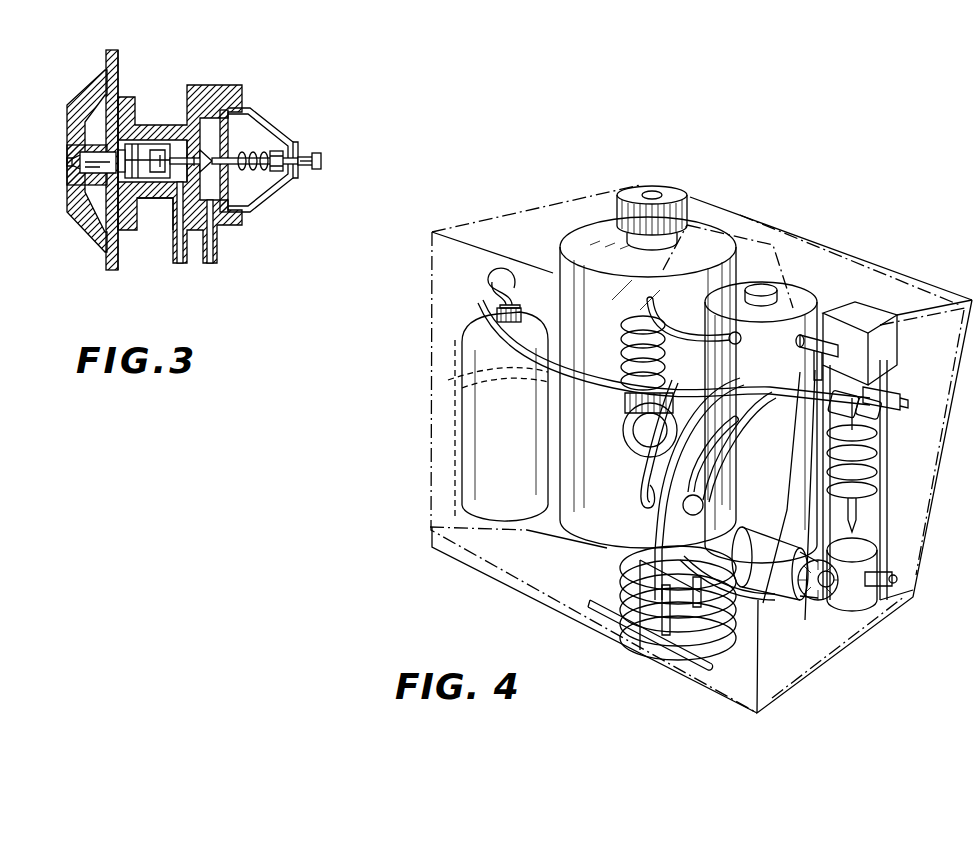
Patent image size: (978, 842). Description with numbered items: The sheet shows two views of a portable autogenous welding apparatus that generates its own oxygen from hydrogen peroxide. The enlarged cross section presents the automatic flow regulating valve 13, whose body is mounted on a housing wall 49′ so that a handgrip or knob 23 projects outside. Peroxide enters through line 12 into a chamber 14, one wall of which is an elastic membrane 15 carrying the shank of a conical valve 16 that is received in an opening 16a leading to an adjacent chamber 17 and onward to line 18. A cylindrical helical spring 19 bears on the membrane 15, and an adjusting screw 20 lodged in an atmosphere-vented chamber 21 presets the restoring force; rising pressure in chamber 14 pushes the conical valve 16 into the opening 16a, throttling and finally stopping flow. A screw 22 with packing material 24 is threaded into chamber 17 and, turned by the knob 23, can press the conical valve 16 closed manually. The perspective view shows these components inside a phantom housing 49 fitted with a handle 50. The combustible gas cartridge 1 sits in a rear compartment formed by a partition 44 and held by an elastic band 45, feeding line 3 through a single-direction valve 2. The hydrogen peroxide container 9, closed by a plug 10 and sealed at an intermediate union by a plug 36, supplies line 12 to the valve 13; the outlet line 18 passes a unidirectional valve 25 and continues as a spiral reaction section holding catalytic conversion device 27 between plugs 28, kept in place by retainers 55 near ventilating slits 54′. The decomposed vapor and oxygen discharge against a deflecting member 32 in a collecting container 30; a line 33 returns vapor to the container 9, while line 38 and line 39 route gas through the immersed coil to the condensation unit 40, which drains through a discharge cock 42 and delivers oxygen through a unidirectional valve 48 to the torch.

In FIG. 4, the combustible gas cartridge 1 is at (476, 340).
In FIG. 4, the single-direction valve 2 is at (880, 420).
In FIG. 4, the line 3 is at (485, 280).
In FIG. 4, the container 9 is at (596, 237).
In FIG. 4, the plug 10 is at (680, 204).
In FIG. 3, the line 12 is at (212, 270).
In FIG. 4, the line 12 is at (617, 579).
In FIG. 3, the automatic fluid flow regulating valve 13 is at (165, 77).
In FIG. 4, the automatic fluid flow regulating valve 13 is at (819, 609).
In FIG. 3, the chamber 14 is at (208, 127).
In FIG. 3, the elastic membrane 15 is at (226, 130).
In FIG. 3, the conical valve 16 is at (200, 176).
In FIG. 3, the opening 16a is at (188, 153).
In FIG. 3, the chamber 17 is at (163, 220).
In FIG. 3, the line 18 is at (180, 268).
In FIG. 4, the line 18 is at (660, 539).
In FIG. 3, the cylindrical helical spring 19 is at (283, 158).
In FIG. 3, the adjusting screw 20 is at (321, 163).
In FIG. 3, the chamber 21 is at (252, 140).
In FIG. 3, the screw 22 is at (110, 183).
In FIG. 3, the handgrip or knob 23 is at (103, 70).
In FIG. 3, the packing material 24 is at (160, 142).
In FIG. 4, the unidirectional valve 25 is at (774, 612).
In FIG. 4, the conversion device 27 is at (683, 655).
In FIG. 4, the plugs 28 is at (620, 546).
In FIG. 4, the container 30 is at (804, 299).
In FIG. 4, the deflecting member 32 is at (742, 419).
In FIG. 4, the line 33 is at (709, 326).
In FIG. 4, the plug 36 is at (620, 428).
In FIG. 4, the line 38 is at (640, 500).
In FIG. 4, the line 39 is at (768, 494).
In FIG. 4, the condensation unit 40 is at (887, 458).
In FIG. 4, the discharge valve or cock 42 is at (893, 578).
In FIG. 4, the partition 44 is at (440, 364).
In FIG. 4, the elastic band 45 is at (505, 398).
In FIG. 4, the unidirectional valve 48 is at (908, 401).
In FIG. 4, the housing 49 is at (522, 214).
In FIG. 3, the housing wall 49′ is at (109, 270).
In FIG. 4, the handle 50 is at (768, 243).
In FIG. 4, the ventilating slits 54′ is at (697, 670).
In FIG. 4, the retainers 55 is at (676, 638).